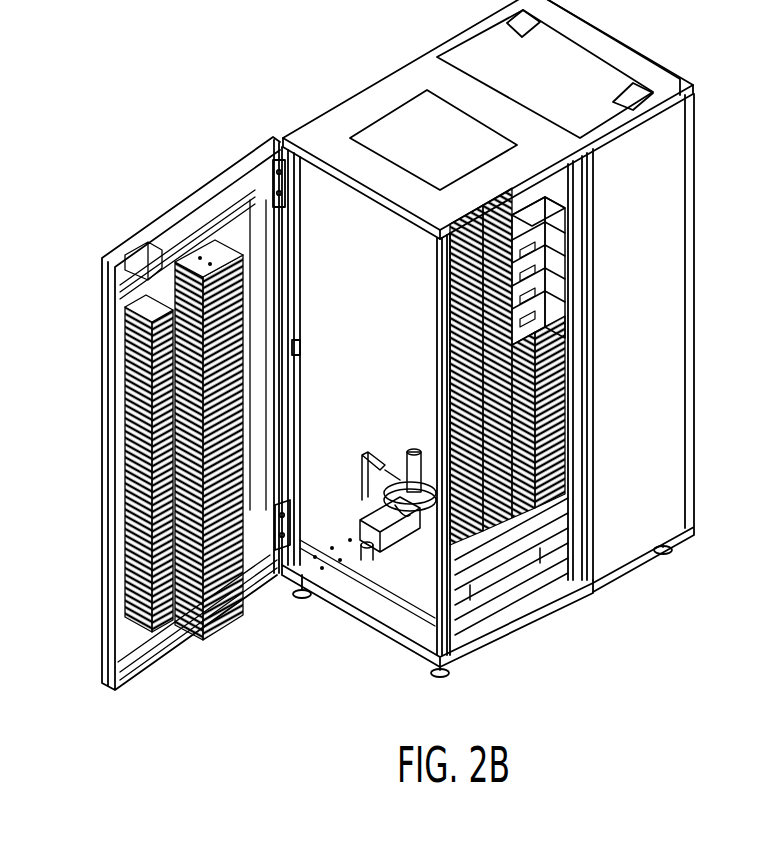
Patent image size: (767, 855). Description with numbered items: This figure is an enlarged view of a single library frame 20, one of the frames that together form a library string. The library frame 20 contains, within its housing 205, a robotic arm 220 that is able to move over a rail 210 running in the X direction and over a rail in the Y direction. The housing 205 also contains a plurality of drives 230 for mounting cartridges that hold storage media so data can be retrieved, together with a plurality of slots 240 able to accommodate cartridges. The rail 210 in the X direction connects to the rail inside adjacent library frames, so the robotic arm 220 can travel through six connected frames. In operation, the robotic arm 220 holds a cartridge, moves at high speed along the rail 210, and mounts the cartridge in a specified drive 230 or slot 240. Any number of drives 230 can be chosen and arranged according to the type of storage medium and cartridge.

The library frame 20 is at (163, 0).
The housing 205 is at (640, 233).
The rail 210 is at (533, 583).
The robotic arm 220 is at (397, 538).
The drives 230 is at (560, 286).
The slots 240 is at (222, 477).